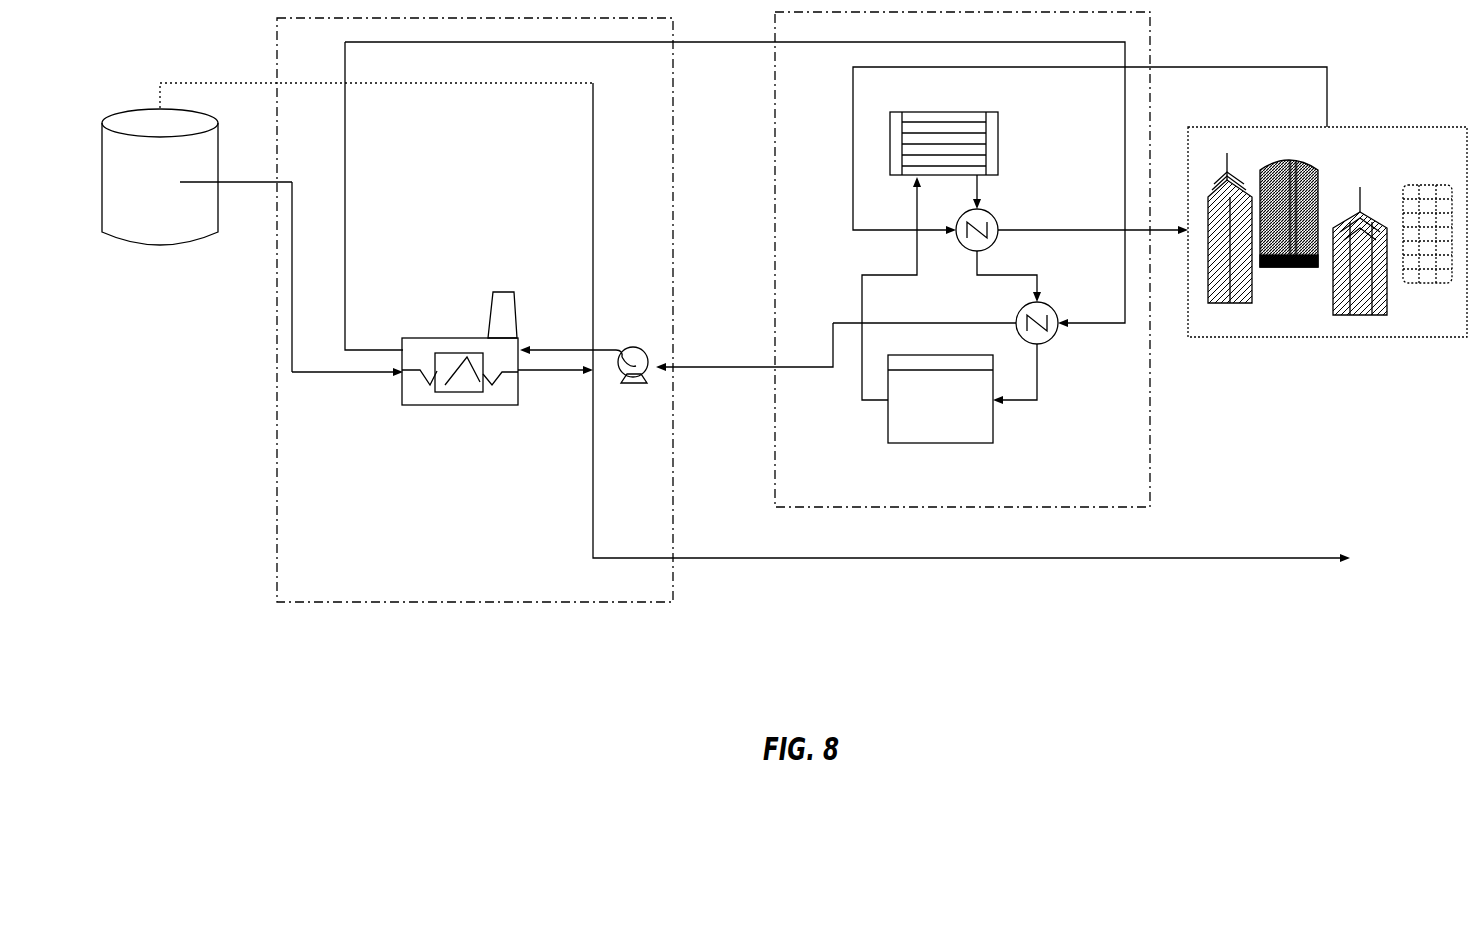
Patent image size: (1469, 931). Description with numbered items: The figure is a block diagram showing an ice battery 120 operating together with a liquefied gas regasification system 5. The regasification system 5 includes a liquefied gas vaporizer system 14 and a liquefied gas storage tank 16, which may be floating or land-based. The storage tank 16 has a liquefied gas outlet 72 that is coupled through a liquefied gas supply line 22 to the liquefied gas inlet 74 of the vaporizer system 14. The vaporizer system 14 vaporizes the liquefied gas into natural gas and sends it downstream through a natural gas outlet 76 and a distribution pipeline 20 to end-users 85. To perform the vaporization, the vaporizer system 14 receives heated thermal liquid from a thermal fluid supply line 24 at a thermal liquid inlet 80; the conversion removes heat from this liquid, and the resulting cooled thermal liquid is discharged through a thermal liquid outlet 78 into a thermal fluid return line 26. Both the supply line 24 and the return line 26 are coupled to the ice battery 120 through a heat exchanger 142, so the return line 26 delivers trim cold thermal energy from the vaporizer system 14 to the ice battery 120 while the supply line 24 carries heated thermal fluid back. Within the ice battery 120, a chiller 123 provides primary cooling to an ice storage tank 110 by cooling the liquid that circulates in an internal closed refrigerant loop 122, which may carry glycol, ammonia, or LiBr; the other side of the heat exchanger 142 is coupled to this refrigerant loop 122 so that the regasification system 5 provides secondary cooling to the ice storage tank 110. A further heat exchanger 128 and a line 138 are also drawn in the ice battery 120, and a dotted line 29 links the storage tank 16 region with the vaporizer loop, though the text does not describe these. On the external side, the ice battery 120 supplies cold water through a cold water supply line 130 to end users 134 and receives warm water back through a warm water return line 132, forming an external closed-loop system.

The regasification system 5 is at (529, 595).
The liquefied gas vaporizer system 14 is at (475, 391).
The liquefied gas storage tank 16 is at (168, 203).
The distribution pipeline 20 is at (772, 556).
The liquefied gas supply line 22 is at (295, 197).
The thermal fluid supply line 24 is at (770, 363).
The thermal fluid return line 26 is at (760, 42).
The vapor return line 29 is at (338, 82).
The liquefied gas outlet 72 is at (228, 180).
The liquefied gas inlet 74 is at (357, 375).
The natural gas outlet 76 is at (537, 373).
The thermal liquid outlet 78 is at (378, 348).
The thermal liquid inlet 80 is at (550, 345).
The end-users 85 is at (1390, 575).
The ice storage tank 110 is at (935, 140).
The ice battery 120 is at (1033, 498).
The refrigerant loop 122 is at (910, 272).
The chiller 123 is at (963, 417).
The heat exchanger 128 is at (997, 222).
The cold water supply line 130 is at (1088, 228).
The warm water return line 132 is at (858, 226).
The end users 134 is at (1365, 182).
The heat transfer line 138 is at (924, 304).
The heat exchanger 142 is at (1058, 337).